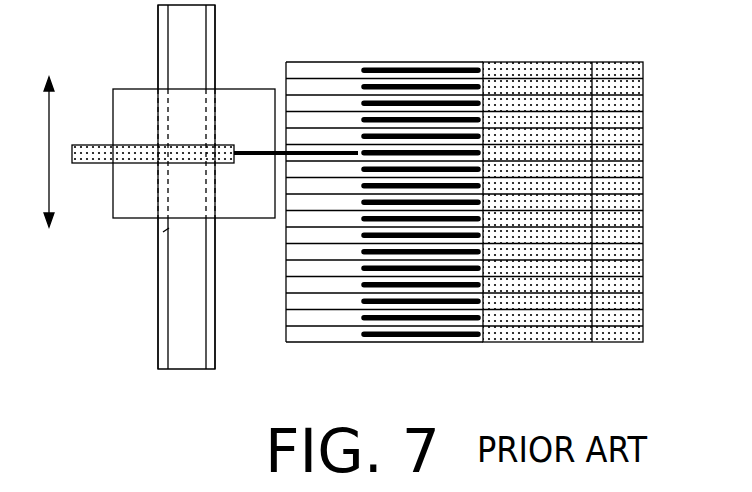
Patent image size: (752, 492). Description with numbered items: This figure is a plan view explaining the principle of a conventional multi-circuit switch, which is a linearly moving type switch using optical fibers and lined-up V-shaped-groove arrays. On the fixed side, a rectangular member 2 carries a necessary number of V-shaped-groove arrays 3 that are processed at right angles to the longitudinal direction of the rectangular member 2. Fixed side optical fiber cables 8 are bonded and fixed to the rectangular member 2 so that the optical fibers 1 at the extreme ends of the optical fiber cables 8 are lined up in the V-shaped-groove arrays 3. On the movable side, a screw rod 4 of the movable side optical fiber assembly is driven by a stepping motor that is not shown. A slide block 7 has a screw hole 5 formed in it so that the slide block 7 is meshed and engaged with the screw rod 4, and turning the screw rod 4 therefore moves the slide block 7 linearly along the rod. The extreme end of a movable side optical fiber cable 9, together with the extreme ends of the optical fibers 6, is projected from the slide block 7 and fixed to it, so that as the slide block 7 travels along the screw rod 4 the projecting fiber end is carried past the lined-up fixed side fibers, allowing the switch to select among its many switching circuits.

The optical fibers 1 is at (452, 62).
The rectangular member 2 is at (353, 62).
The V-shaped-groove arrays 3 is at (318, 62).
The screw rod 4 is at (187, 338).
The screw hole 5 is at (163, 232).
The optical fibers 6 is at (262, 150).
The slide block 7 is at (131, 92).
The fixed side optical fiber cables 8 is at (557, 62).
The movable side optical fiber cable 9 is at (94, 163).